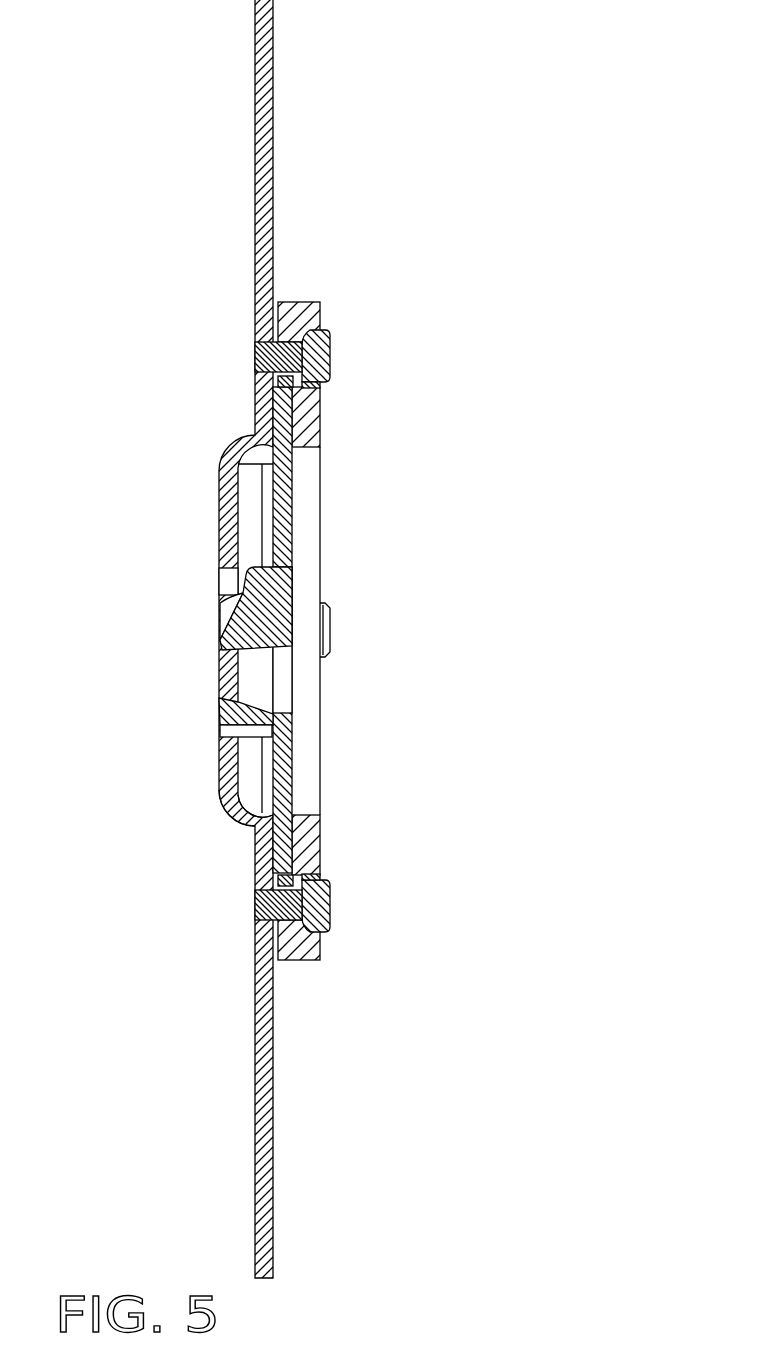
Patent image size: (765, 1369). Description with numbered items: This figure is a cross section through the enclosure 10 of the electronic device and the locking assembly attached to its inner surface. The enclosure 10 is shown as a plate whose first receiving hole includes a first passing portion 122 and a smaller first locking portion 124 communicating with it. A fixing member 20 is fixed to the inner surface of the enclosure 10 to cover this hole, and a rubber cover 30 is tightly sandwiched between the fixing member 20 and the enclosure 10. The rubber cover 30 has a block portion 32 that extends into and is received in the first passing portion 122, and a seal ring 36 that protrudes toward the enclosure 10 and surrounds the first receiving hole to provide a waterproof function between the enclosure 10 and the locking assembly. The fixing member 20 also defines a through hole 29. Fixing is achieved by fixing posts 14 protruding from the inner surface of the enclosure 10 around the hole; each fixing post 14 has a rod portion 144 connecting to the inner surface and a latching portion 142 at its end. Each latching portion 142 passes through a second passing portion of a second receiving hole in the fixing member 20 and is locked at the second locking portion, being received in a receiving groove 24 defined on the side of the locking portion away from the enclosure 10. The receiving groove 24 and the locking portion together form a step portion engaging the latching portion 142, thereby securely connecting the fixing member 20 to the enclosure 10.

The enclosure 10 is at (274, 95).
The fixing member 20 is at (298, 313).
The fixing post 14 is at (220, 606).
The rod portion 144 is at (270, 343).
The latching portion 142 is at (262, 370).
The receiving groove 24 is at (312, 327).
The rubber cover 30 is at (285, 475).
The through hole 29 is at (302, 686).
The first locking portion 124 is at (228, 580).
The block portion 32 is at (233, 688).
The first passing portion 122 is at (222, 729).
The seal ring 36 is at (255, 823).